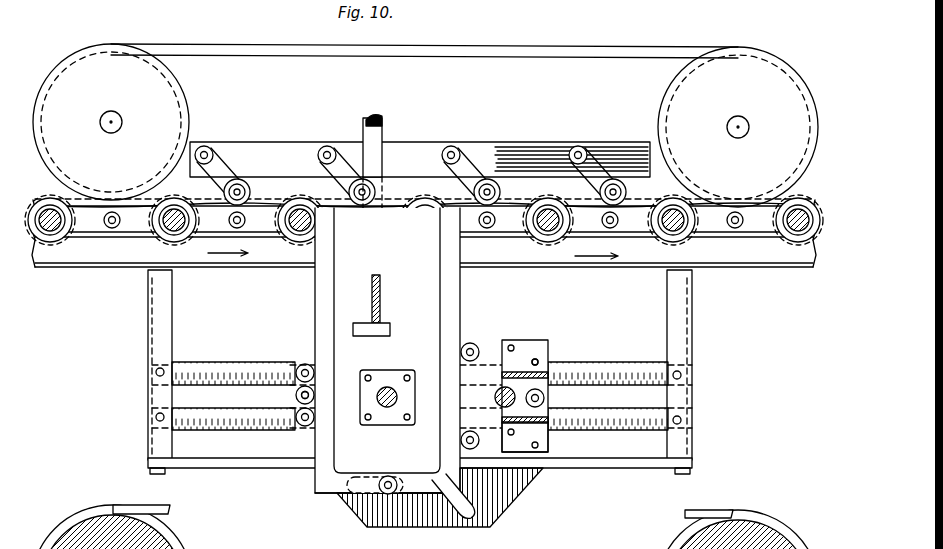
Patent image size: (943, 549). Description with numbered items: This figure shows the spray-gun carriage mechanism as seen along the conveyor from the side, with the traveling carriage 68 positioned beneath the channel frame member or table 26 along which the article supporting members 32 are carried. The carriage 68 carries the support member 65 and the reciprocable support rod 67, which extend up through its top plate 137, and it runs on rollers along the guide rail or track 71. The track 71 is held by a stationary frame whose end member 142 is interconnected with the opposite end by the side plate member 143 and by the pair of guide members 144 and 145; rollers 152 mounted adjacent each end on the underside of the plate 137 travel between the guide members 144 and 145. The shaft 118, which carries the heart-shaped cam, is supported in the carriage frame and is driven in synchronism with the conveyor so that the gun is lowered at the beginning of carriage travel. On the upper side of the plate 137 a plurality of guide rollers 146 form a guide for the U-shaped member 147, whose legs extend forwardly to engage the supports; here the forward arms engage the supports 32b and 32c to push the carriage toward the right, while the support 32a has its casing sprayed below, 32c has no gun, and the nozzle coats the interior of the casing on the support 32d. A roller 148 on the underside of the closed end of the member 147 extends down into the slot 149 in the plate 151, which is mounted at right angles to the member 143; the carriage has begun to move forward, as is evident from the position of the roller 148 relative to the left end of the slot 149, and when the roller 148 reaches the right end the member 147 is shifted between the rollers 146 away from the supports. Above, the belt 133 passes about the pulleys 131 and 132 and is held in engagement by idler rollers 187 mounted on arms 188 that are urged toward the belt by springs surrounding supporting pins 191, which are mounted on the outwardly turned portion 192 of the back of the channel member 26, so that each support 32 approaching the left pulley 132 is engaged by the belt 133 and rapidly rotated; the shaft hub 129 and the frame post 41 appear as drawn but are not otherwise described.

The belt 133 is at (572, 50).
The pulley shaft 129 is at (740, 116).
The left pulley 132 is at (155, 80).
The pulley 131 is at (686, 90).
The arms 188 is at (222, 162).
The outwardly turned portion 192 is at (245, 150).
The idler rollers 187 is at (240, 178).
The supporting pins 191 is at (334, 144).
The support 32a is at (170, 232).
The support 32b is at (300, 232).
The support 32c is at (425, 232).
The support 32d is at (546, 232).
The support members 32 is at (678, 232).
The channel frame member 26 is at (785, 262).
The frame post 41 is at (152, 318).
The end member 142 is at (683, 334).
The side plate member 143 is at (215, 462).
The guide member 144 is at (175, 426).
The guide member 145 is at (228, 370).
The guide rail or track 71 is at (612, 398).
The U-shaped member 147 is at (448, 306).
The shaft 118 is at (385, 325).
The support member 65 is at (386, 406).
The traveling carriage 68 is at (560, 350).
The support rod 67 is at (502, 396).
The roller 152 is at (552, 364).
The plate 137 is at (546, 432).
The guide rollers 146 is at (474, 348).
The slot 149 is at (496, 520).
The roller 148 is at (350, 504).
The plate 151 is at (530, 484).